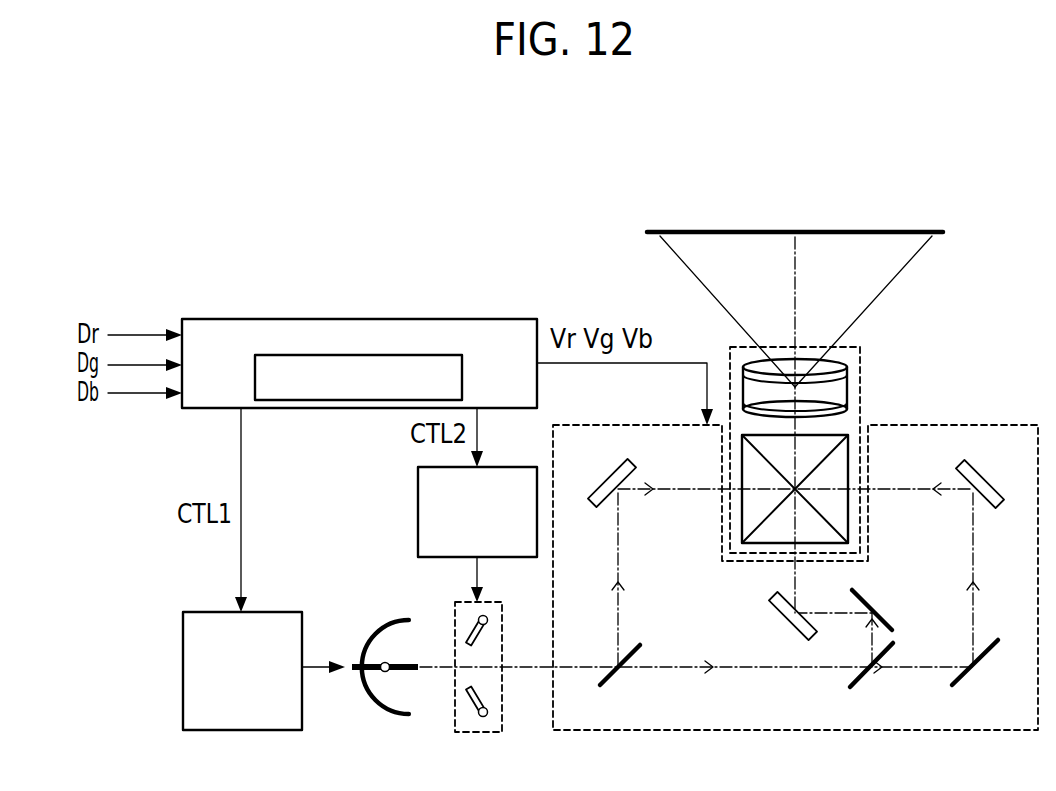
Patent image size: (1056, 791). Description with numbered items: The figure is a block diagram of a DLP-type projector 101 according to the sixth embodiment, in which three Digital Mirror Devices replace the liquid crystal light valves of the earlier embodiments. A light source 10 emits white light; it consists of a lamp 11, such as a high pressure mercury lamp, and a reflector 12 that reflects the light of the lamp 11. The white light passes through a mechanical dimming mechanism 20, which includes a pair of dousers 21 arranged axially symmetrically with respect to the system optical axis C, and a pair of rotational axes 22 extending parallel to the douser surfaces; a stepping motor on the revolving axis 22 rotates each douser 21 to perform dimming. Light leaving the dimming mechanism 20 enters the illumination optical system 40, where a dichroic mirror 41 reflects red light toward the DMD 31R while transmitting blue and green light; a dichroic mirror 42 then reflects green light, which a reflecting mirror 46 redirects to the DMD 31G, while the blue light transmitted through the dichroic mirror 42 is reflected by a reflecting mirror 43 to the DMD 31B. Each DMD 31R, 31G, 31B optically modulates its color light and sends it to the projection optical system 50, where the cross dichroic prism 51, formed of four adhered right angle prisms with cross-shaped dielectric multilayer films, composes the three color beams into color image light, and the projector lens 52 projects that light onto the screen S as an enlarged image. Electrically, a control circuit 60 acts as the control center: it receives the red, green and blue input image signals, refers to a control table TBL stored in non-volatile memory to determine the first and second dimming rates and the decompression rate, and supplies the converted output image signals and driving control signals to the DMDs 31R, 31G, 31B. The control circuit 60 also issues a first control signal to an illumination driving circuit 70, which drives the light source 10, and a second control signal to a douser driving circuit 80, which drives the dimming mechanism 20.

The DLP-type projector 101 is at (430, 201).
The control circuit 60 is at (359, 364).
The control table TBL is at (307, 408).
The illumination driving circuit 70 is at (196, 612).
The douser driving circuit 80 is at (418, 505).
The light source 10 is at (380, 662).
The lamp 11 is at (382, 660).
The reflector 12 is at (396, 621).
The mechanical dimming mechanism 20 is at (478, 674).
The douser 21 is at (474, 628).
The rotational axis 22 is at (487, 615).
The system optical axis C is at (525, 662).
The illumination optical system 40 is at (1010, 425).
The dichroic mirror 41 is at (607, 680).
The dichroic mirror 42 is at (860, 677).
The reflecting mirror 43 is at (967, 680).
The reflecting mirror 46 is at (875, 597).
The DMD for red 31R is at (604, 478).
The DMD for green 31G is at (780, 620).
The DMD for blue 31B is at (1010, 458).
The projection optical system 50 is at (838, 425).
The cross dichroic prism 51 is at (848, 433).
The projector lens 52 is at (849, 385).
The screen S is at (840, 238).